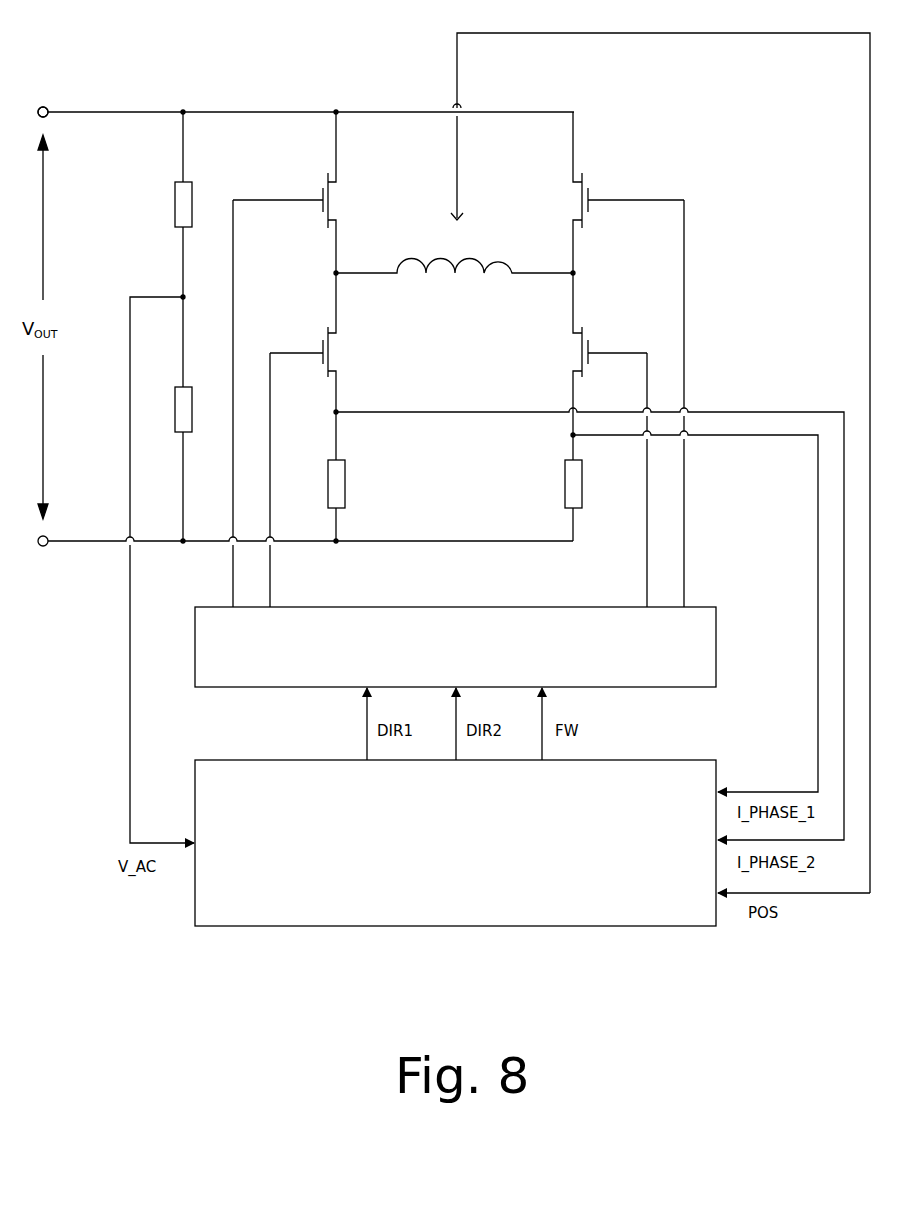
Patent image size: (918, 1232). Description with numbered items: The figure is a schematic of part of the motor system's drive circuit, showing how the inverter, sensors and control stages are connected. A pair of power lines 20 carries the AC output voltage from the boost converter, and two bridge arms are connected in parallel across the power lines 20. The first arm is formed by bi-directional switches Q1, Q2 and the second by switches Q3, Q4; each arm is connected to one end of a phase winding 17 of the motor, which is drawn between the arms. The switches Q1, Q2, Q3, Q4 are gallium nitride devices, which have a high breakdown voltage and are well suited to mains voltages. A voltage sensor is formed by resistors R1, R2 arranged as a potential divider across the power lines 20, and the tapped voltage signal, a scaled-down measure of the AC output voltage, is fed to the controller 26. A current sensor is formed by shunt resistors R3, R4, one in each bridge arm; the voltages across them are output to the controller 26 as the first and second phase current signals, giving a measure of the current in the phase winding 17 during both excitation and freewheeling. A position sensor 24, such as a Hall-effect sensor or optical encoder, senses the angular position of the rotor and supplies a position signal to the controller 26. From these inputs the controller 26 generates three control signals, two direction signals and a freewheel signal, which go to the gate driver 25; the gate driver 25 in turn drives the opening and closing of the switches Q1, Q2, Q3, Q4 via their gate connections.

The power lines 20 is at (88, 111).
The position sensor 24 is at (456, 217).
The phase winding 17 is at (455, 276).
The gate driver 25 is at (716, 650).
The controller 26 is at (634, 926).
The bi-directional switch Q1 is at (284, 192).
The bi-directional switch Q2 is at (303, 366).
The bi-directional switch Q3 is at (628, 192).
The bi-directional switch Q4 is at (610, 366).
The resistor R1 is at (166, 204).
The resistor R2 is at (166, 419).
The shunt resistor R3 is at (351, 500).
The shunt resistor R4 is at (557, 500).